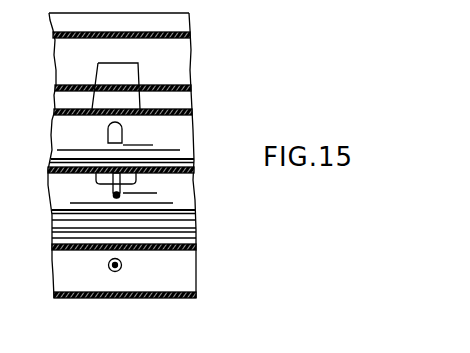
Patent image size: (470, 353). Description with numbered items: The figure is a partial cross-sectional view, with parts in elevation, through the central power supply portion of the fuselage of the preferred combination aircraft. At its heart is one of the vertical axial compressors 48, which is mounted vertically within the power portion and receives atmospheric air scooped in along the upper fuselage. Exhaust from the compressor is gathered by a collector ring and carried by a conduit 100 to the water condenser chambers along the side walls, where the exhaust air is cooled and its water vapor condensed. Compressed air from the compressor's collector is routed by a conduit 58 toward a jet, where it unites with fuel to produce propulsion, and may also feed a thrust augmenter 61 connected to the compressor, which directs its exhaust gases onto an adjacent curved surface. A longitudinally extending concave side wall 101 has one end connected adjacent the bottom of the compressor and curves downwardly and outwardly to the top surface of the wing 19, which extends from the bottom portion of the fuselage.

The vertical axial compressor 48 is at (132, 66).
The conduit 100 is at (118, 132).
The thrust augmenter 61 is at (113, 193).
The longitudinally extending concave side wall 101 is at (160, 223).
The conduit 58 is at (122, 265).
The wing 19 is at (70, 292).